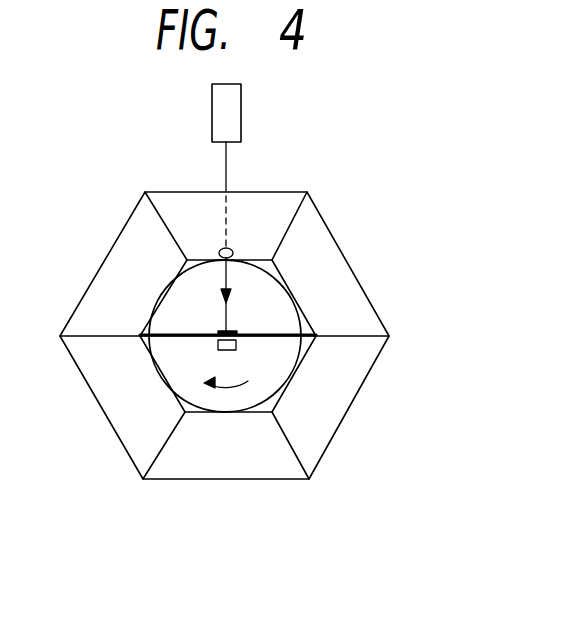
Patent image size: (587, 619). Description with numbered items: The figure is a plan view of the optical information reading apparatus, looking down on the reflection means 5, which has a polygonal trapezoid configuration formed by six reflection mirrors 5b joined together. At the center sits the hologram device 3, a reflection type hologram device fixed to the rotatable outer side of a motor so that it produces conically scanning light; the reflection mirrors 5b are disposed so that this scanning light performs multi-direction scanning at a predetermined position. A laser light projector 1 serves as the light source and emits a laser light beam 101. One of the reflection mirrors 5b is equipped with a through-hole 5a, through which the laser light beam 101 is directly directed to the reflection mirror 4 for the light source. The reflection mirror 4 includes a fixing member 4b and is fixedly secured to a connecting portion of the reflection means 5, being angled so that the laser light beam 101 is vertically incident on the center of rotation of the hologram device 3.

The laser light projector 1 is at (241, 98).
The laser light beam 101 is at (225, 157).
The through-hole 5a is at (232, 247).
The reflection mirrors 5b is at (177, 198).
The reflection means 5 is at (396, 321).
The fixing member 4b is at (273, 332).
The reflection mirror 4 is at (218, 345).
The hologram device 3 is at (290, 358).